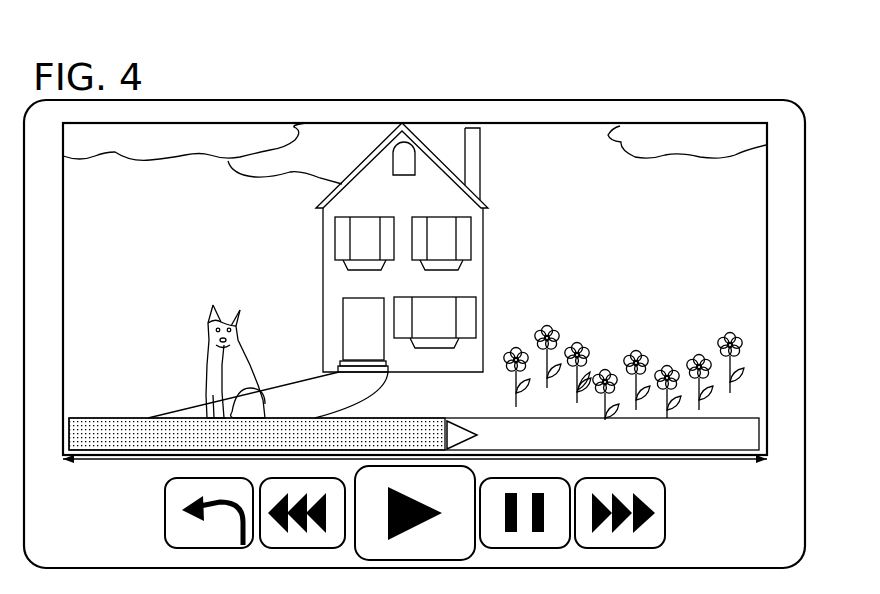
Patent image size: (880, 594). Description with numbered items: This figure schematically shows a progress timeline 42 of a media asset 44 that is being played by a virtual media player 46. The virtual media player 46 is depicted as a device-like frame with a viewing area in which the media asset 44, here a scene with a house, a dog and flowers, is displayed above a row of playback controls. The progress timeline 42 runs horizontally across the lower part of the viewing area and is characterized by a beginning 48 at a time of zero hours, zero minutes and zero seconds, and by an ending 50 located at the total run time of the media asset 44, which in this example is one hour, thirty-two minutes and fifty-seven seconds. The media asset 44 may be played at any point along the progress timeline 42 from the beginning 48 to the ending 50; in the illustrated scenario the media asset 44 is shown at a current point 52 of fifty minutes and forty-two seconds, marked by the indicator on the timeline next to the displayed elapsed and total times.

The progress timeline 42 is at (129, 411).
The media asset 44 is at (603, 216).
The virtual media player 46 is at (592, 94).
The beginning 48 is at (65, 461).
The ending 50 is at (766, 461).
The current point 52 is at (443, 414).